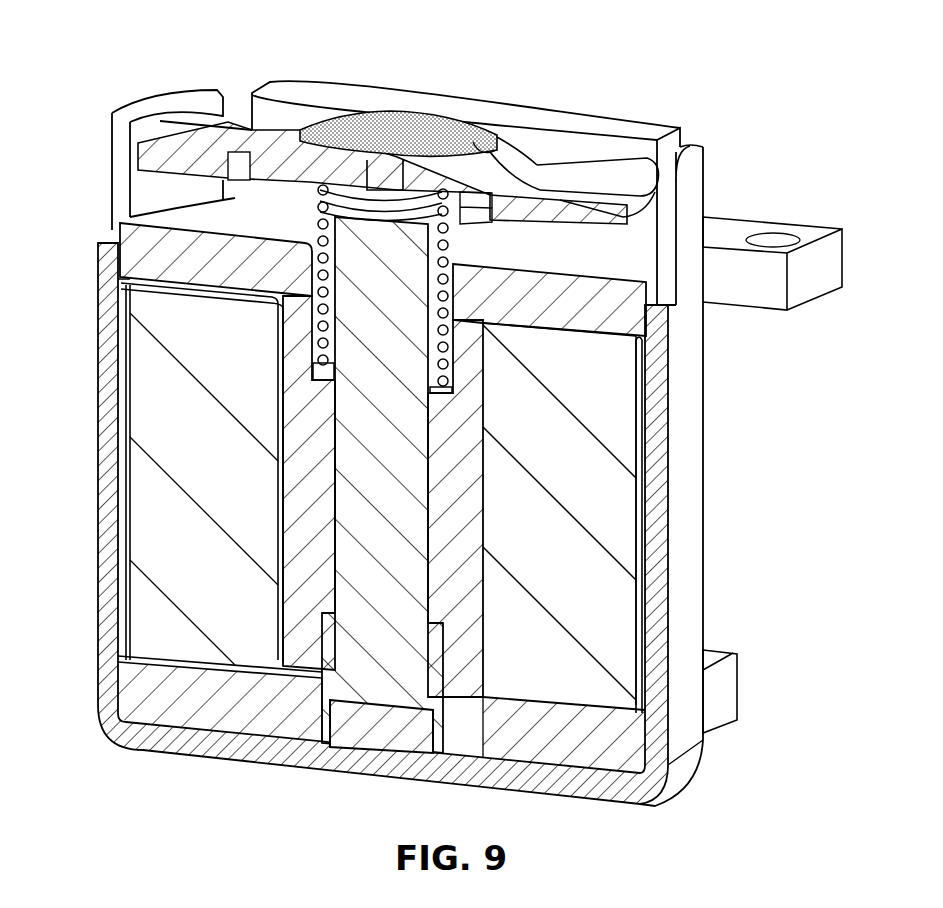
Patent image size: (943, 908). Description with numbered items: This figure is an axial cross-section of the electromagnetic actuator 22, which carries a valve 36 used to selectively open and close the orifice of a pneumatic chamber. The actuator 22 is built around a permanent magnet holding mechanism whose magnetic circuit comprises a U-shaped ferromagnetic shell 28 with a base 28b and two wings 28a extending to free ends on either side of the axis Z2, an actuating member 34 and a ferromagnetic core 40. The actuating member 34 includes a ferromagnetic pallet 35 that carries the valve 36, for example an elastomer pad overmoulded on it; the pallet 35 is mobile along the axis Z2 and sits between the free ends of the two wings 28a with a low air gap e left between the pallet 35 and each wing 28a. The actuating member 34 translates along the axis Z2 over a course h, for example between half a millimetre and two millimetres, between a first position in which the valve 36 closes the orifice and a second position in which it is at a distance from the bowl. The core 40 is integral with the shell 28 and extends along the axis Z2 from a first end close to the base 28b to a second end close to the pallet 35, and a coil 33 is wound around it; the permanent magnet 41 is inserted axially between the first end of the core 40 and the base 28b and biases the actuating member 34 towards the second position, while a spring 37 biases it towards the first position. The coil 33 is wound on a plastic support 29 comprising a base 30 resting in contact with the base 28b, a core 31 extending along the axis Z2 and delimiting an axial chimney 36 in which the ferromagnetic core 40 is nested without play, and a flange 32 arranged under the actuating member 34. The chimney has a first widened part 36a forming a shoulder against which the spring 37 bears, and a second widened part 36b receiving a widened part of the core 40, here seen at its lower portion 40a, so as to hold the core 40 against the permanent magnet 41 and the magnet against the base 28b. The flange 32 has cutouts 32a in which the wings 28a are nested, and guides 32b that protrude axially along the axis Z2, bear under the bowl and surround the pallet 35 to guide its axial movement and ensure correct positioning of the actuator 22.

The actuator 22 is at (697, 110).
The ferromagnetic shell 28 is at (407, 478).
The wings 28a is at (110, 453).
The base 28b is at (587, 790).
The support 29 is at (620, 757).
The base 30 is at (162, 702).
The core 31 is at (307, 532).
The flange 32 is at (442, 209).
The cutouts 32a is at (743, 283).
The guides 32b is at (525, 118).
The coil 33 is at (597, 457).
The actuating member 34 is at (633, 147).
The pallet 35 is at (598, 173).
The valve 36 is at (330, 367).
The first widened part 36a is at (125, 292).
The second widened part 36b is at (117, 670).
The spring 37 is at (322, 180).
The core 40 is at (238, 527).
The plunger lower portion 40a is at (357, 673).
The permanent magnet 41 is at (375, 732).
The axis Z2 is at (382, 233).
The course h is at (382, 243).
The air gap e is at (593, 240).